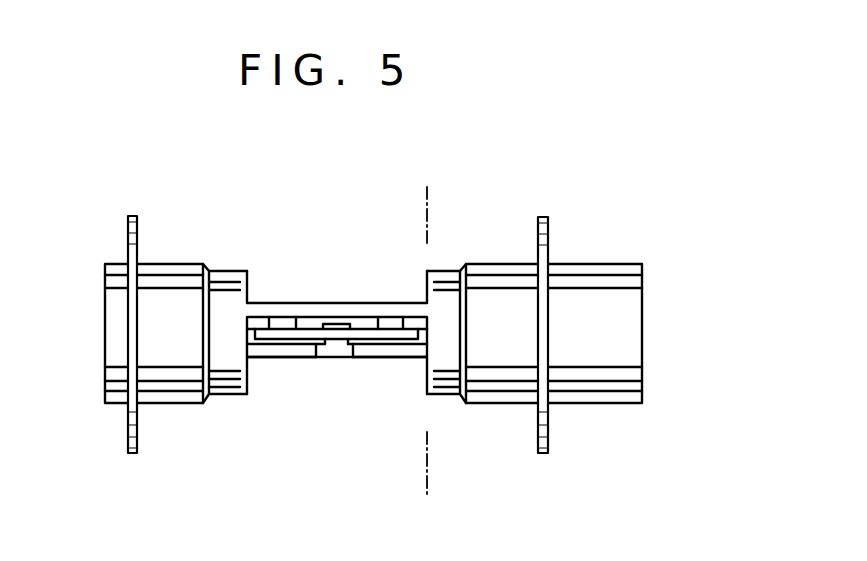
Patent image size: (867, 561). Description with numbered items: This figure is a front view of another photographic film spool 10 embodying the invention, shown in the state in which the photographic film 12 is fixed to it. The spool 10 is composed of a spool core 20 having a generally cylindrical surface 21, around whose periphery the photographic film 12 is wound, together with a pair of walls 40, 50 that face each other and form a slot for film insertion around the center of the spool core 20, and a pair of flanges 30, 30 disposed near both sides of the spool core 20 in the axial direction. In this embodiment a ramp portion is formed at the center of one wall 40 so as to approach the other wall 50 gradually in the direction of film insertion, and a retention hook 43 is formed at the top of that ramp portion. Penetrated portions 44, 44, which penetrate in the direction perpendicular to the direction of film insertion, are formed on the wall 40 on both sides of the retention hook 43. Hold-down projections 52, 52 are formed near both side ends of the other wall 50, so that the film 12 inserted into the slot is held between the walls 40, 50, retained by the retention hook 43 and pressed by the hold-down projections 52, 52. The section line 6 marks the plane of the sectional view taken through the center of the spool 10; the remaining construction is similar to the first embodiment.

The photographic film spool 10 is at (264, 194).
The photographic film 12 is at (262, 330).
The spool core 20 is at (233, 270).
The cylindrical surface 21 is at (173, 265).
The flange 30 is at (128, 245).
The wall 40 is at (305, 362).
The retention hook 43 is at (337, 324).
The penetrated portion 44 is at (275, 362).
The wall 50 is at (289, 317).
The hold-down projection 52 is at (285, 324).
The section line 6- 6 is at (427, 187).